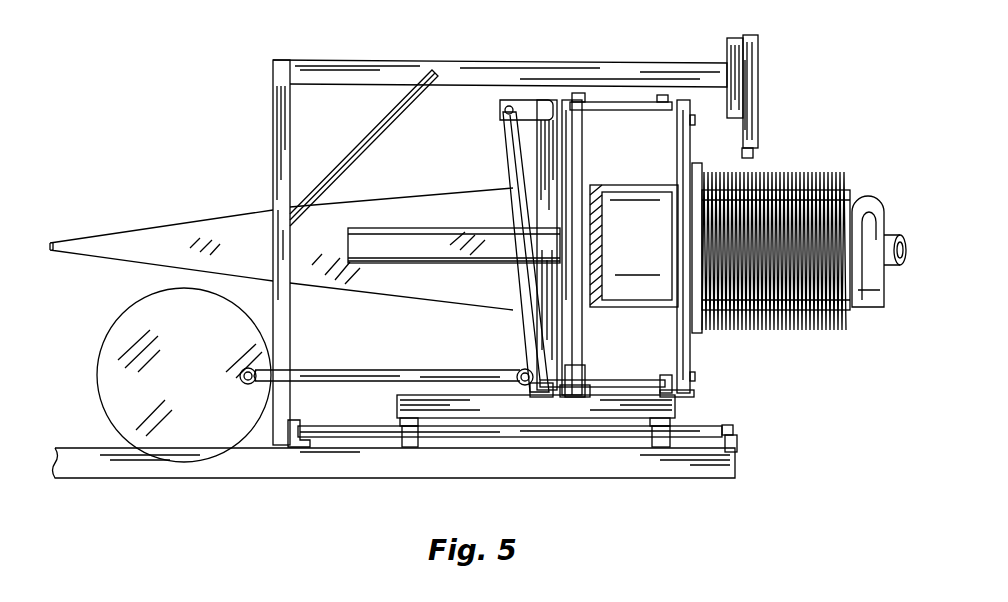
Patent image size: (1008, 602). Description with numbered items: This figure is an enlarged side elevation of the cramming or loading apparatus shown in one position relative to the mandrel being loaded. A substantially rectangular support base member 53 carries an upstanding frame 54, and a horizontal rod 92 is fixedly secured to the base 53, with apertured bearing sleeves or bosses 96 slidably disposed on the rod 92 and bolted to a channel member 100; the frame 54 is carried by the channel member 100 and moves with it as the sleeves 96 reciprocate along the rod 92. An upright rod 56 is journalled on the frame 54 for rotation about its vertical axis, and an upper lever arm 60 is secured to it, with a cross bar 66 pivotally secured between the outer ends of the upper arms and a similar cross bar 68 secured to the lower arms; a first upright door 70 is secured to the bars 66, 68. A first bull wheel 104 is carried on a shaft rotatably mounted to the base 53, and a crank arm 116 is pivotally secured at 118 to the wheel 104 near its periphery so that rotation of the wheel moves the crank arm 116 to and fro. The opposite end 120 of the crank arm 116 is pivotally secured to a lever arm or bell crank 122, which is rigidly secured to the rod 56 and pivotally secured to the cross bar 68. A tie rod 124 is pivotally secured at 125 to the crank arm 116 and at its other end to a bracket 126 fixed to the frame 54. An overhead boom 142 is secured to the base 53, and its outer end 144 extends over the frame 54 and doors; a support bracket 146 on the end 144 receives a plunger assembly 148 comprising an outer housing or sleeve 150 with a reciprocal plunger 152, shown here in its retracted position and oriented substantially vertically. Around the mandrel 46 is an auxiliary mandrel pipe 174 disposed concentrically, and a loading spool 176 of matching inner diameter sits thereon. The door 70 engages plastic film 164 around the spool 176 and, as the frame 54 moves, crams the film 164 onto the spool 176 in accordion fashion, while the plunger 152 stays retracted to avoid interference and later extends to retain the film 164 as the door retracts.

The overhead arm or boom 142 is at (339, 55).
The outer end of the boom 144 is at (468, 60).
The plastic film 164 is at (165, 238).
The mandrel 46 is at (400, 238).
The first bull wheel 104 is at (120, 342).
The pivot of crank arm on bull wheel 118 is at (240, 386).
The crank arm 116 is at (333, 372).
The pivot of tie rod on crank arm 125 is at (517, 373).
The frame 54 is at (550, 328).
The tie rod 124 is at (502, 112).
The bracket 126 is at (531, 98).
The upright rod 56 is at (585, 147).
The upper lever arm 60 is at (603, 101).
The cross bar 66 is at (660, 95).
The first upright door 70 is at (683, 150).
The cross bar 68 is at (696, 390).
The loading spool 176 is at (855, 195).
The auxiliary mandrel pipe 174 is at (865, 200).
The opposite end of crank arm 120 is at (583, 375).
The lever arm or bell crank 122 is at (625, 385).
The channel member 100 is at (555, 405).
The horizontal rod 92 is at (325, 426).
The bearing sleeves or bosses 96 is at (405, 446).
The support base member 53 is at (335, 455).
The bracket 146 is at (733, 42).
The plunger assembly 148 is at (758, 37).
The outer housing or sleeve 150 is at (760, 82).
The plunger 152 is at (755, 154).